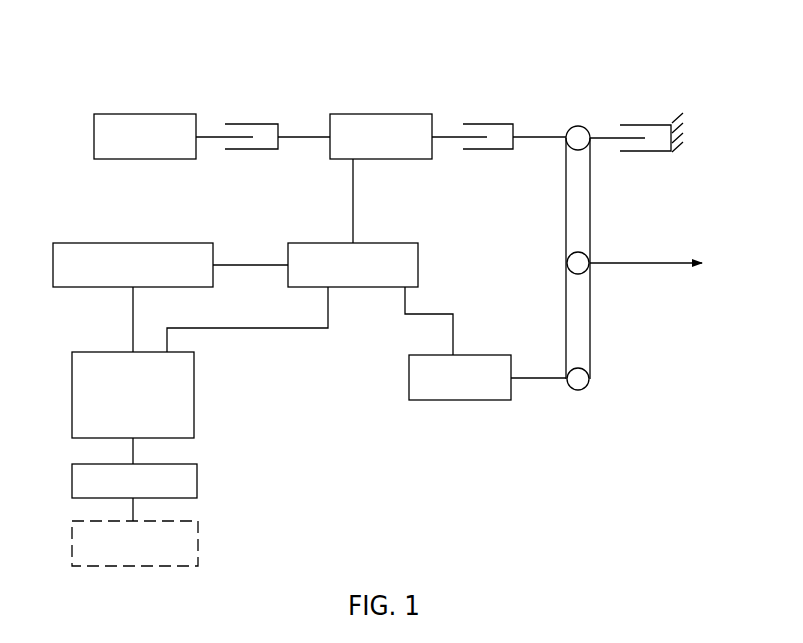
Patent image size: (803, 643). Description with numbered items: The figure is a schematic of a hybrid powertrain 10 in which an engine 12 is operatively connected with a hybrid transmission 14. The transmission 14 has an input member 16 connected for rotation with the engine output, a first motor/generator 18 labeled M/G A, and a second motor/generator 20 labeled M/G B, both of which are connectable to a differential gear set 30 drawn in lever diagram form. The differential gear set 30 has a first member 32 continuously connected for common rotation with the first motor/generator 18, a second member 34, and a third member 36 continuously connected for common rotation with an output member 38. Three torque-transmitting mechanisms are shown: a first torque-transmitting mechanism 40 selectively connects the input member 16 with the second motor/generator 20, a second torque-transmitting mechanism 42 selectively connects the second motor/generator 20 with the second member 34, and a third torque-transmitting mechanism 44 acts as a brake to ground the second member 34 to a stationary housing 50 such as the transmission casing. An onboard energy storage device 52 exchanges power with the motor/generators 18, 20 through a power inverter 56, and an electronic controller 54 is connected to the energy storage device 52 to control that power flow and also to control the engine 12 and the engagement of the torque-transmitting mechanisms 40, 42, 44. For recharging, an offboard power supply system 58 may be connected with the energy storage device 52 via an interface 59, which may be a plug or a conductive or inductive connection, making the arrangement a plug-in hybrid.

The hybrid powertrain 10 is at (415, 55).
The engine 12 is at (140, 113).
The hybrid transmission 14 is at (547, 55).
The input member 16 is at (208, 135).
The first motor/generator 18 is at (480, 355).
The second motor/generator 20 is at (395, 159).
The differential gear set 30 is at (540, 196).
The first member 32 is at (590, 382).
The second member 34 is at (578, 125).
The third member 36 is at (585, 253).
The output member 38 is at (645, 262).
The first torque-transmitting mechanism 40 is at (252, 104).
The second torque-transmitting mechanism 42 is at (460, 127).
The third torque-transmitting mechanism 44 is at (618, 129).
The stationary housing 50 is at (676, 120).
The energy storage device 52 is at (72, 382).
The electronic controller 54 is at (85, 243).
The power inverter 56 is at (322, 243).
The offboard power supply system 58 is at (72, 543).
The interface 59 is at (197, 482).